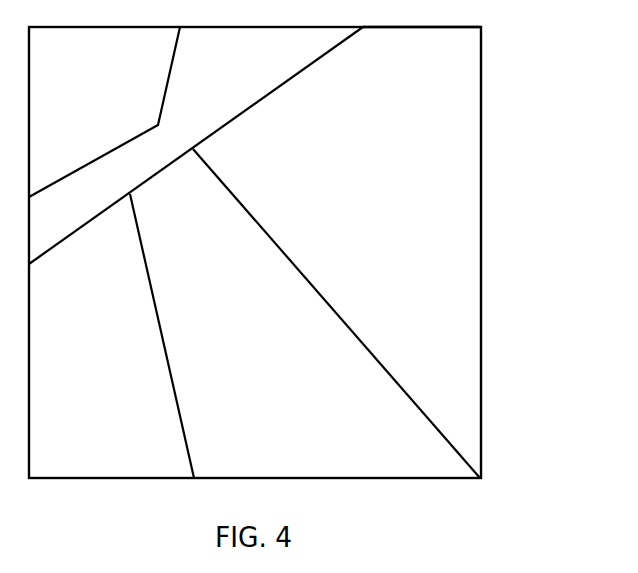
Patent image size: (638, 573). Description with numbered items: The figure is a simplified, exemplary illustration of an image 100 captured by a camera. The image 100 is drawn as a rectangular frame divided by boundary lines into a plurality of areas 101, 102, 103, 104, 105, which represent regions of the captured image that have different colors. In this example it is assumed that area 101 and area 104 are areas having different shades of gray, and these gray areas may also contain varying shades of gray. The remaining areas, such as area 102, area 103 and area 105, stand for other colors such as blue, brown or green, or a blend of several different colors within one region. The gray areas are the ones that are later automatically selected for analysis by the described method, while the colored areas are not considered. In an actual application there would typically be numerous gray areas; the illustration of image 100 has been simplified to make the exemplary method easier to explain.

The image 100 is at (482, 210).
The area 101 is at (117, 102).
The area 102 is at (242, 86).
The area 103 is at (110, 364).
The area 104 is at (252, 329).
The area 105 is at (384, 192).